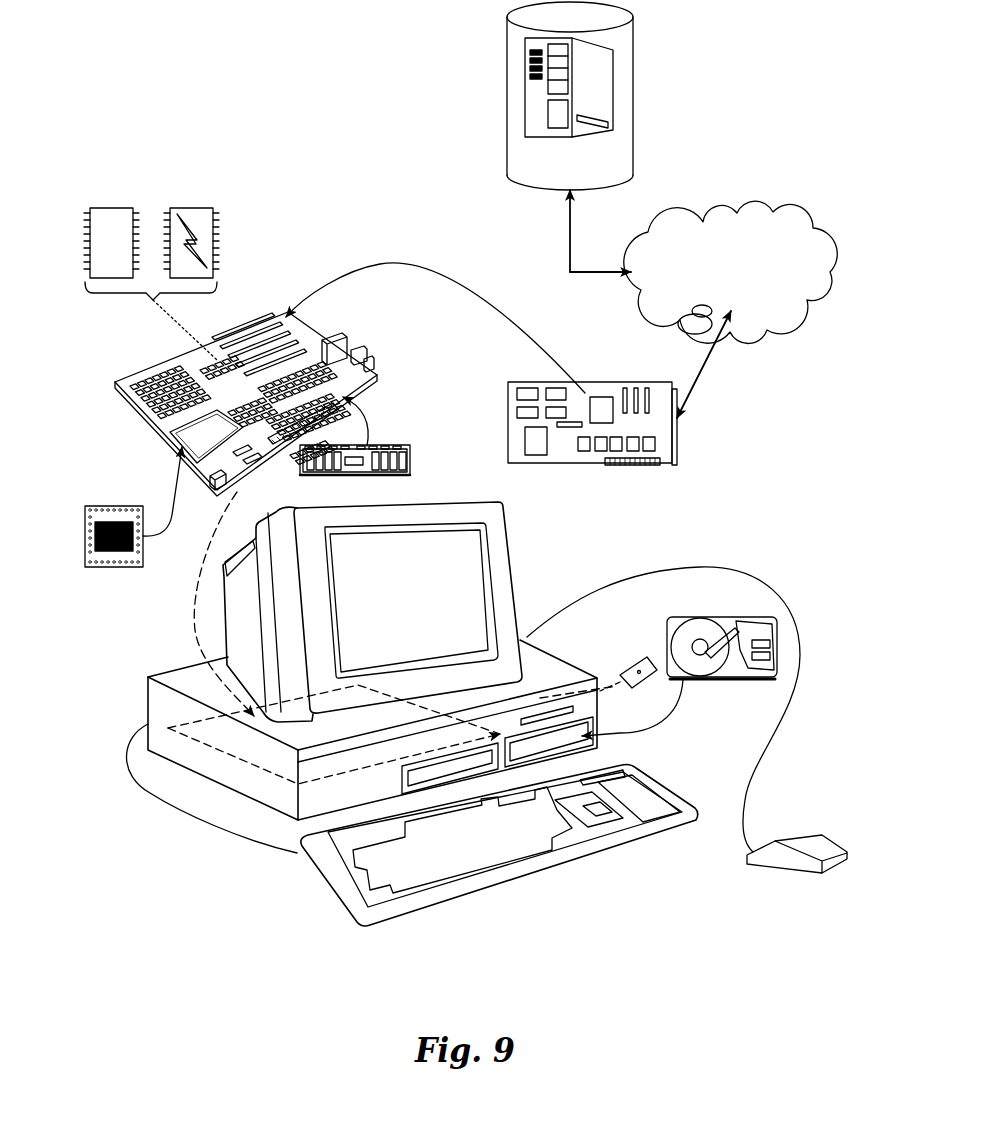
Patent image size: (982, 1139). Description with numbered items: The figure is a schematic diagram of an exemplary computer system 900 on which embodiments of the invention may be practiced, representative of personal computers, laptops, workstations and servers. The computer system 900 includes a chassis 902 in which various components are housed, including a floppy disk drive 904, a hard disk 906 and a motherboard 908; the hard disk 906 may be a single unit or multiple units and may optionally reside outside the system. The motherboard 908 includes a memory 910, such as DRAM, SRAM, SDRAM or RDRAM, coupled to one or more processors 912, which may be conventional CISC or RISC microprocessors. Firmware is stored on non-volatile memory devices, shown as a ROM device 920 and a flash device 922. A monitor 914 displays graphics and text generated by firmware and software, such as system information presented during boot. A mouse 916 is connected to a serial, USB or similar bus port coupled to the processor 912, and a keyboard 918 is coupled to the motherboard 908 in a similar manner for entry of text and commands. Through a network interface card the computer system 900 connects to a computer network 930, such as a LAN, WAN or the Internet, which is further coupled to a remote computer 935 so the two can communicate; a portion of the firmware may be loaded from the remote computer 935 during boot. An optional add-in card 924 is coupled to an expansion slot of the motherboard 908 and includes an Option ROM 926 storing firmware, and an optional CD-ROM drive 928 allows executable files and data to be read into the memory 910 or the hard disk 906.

The computer system 900 is at (460, 737).
The chassis 902 is at (163, 702).
The floppy disk drive 904 is at (562, 703).
The hard disk 906 is at (737, 675).
The motherboard 908 is at (128, 366).
The memory 910 is at (413, 450).
The processor 912 is at (122, 568).
The monitor 914 is at (510, 560).
The mouse 916 is at (793, 862).
The keyboard 918 is at (588, 860).
The ROM device 920 is at (103, 218).
The flash device 922 is at (197, 213).
The add-in card 924 is at (668, 422).
The Option ROM 926 is at (523, 390).
The CD-ROM drive 928 is at (402, 783).
The computer network 930 is at (780, 314).
The remote computer 935 is at (636, 58).